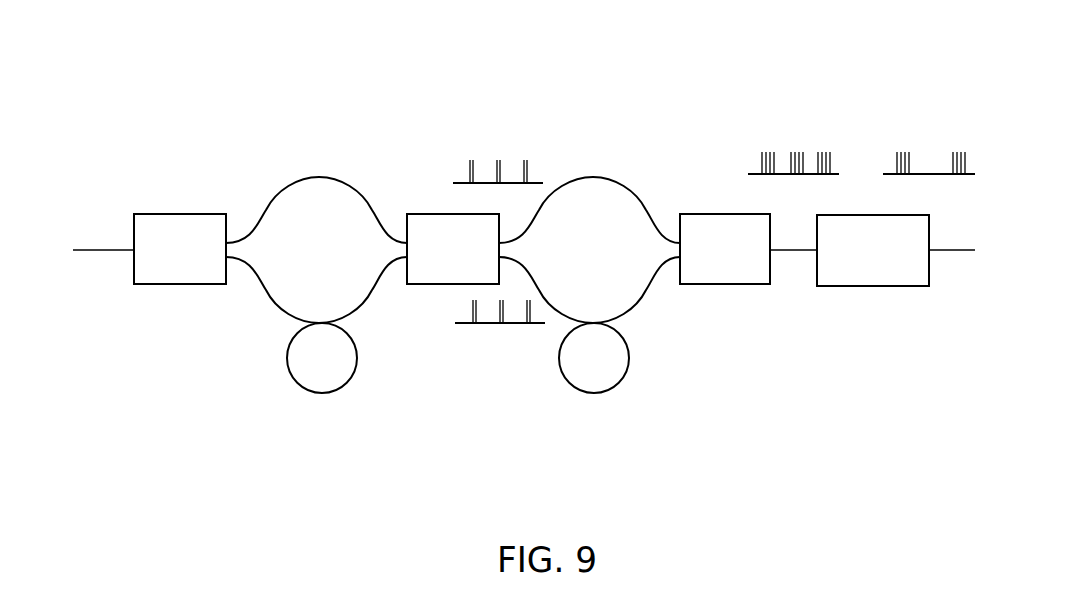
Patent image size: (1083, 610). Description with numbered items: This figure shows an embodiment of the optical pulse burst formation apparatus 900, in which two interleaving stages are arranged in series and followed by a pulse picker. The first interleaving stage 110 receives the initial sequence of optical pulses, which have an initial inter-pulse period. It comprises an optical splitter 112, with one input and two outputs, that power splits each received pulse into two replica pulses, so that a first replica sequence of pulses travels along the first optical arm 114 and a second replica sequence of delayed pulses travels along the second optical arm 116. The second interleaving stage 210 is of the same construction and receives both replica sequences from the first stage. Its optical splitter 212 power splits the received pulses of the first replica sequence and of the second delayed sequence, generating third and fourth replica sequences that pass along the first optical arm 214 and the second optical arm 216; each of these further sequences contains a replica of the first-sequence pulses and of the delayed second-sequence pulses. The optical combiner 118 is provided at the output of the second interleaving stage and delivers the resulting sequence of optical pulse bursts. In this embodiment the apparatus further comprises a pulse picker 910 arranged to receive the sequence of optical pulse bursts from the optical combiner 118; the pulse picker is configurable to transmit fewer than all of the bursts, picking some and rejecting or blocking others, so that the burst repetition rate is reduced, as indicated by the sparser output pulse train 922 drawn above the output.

The first interleaving stage 110 is at (257, 127).
The optical splitter 112 is at (167, 273).
The first optical arm 114 is at (338, 167).
The second optical arm 116 is at (260, 340).
The optical combiner 118 is at (727, 273).
The second interleaving stage 210 is at (587, 137).
The optical splitter 212 is at (430, 273).
The first optical arm 214 is at (643, 177).
The second optical arm 216 is at (545, 348).
The optical pulse burst formation apparatus 900 is at (345, 443).
The pulse picker 910 is at (915, 272).
The picked pulse train 922 is at (932, 143).